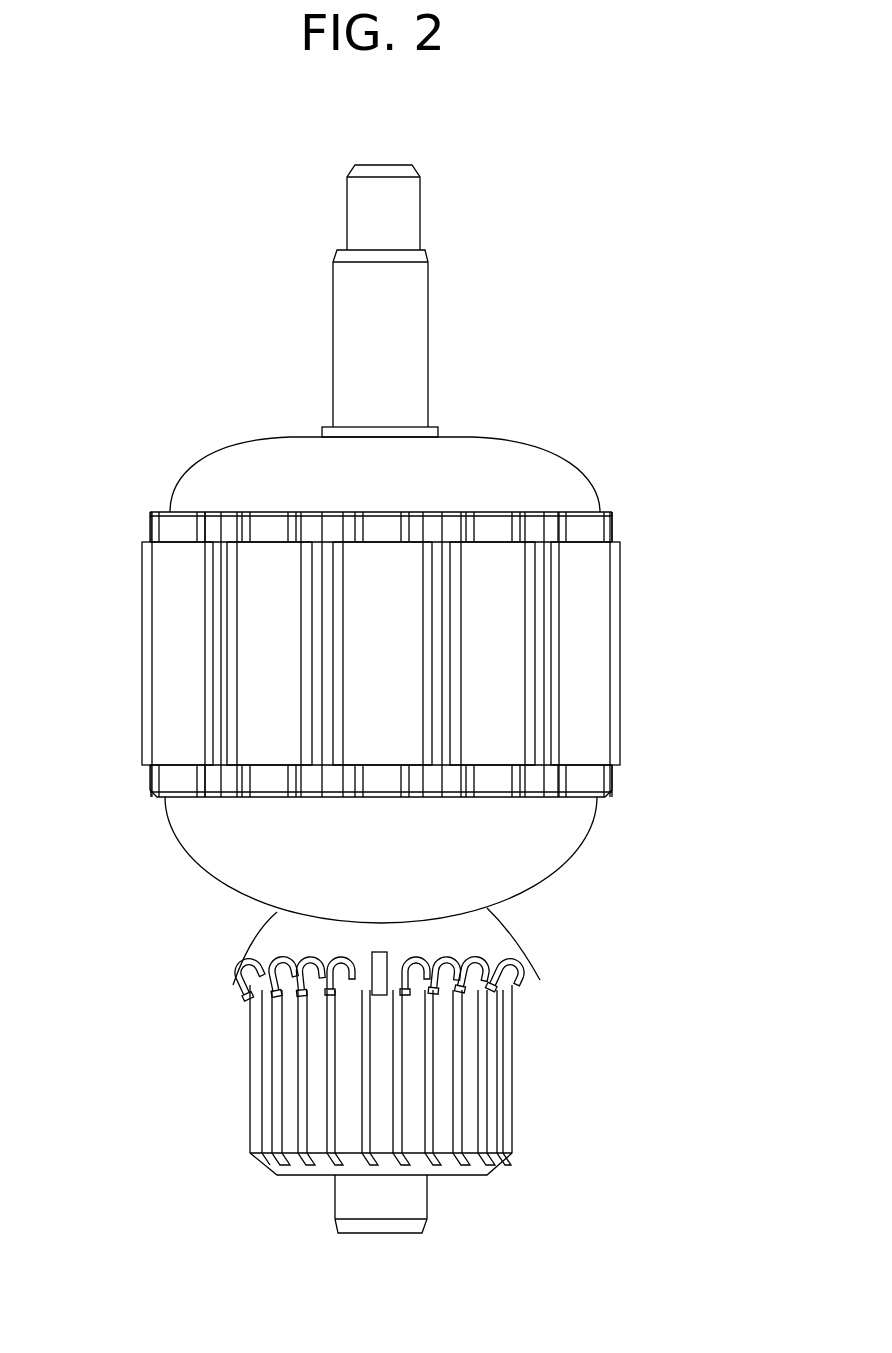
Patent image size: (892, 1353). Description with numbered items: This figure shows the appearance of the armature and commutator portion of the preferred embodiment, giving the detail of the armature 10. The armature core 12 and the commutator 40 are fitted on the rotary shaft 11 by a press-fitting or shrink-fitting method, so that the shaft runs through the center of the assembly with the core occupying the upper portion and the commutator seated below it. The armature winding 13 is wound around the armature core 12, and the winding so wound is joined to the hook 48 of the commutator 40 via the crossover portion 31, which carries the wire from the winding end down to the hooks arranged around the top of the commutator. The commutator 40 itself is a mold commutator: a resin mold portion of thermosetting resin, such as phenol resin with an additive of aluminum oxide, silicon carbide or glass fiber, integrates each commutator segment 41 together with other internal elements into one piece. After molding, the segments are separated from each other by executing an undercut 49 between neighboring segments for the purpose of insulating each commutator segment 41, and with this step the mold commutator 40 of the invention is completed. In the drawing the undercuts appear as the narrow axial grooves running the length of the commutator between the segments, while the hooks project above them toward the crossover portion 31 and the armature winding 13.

The armature 10 is at (607, 453).
The rotary shaft 11 is at (388, 368).
The armature core 12 is at (585, 685).
The armature winding 13 is at (513, 858).
The crossover portion 31 is at (287, 942).
The commutator 40 is at (545, 1023).
The commutator segment 41 is at (445, 1080).
The hook 48 is at (228, 983).
The undercut 49 is at (328, 1080).